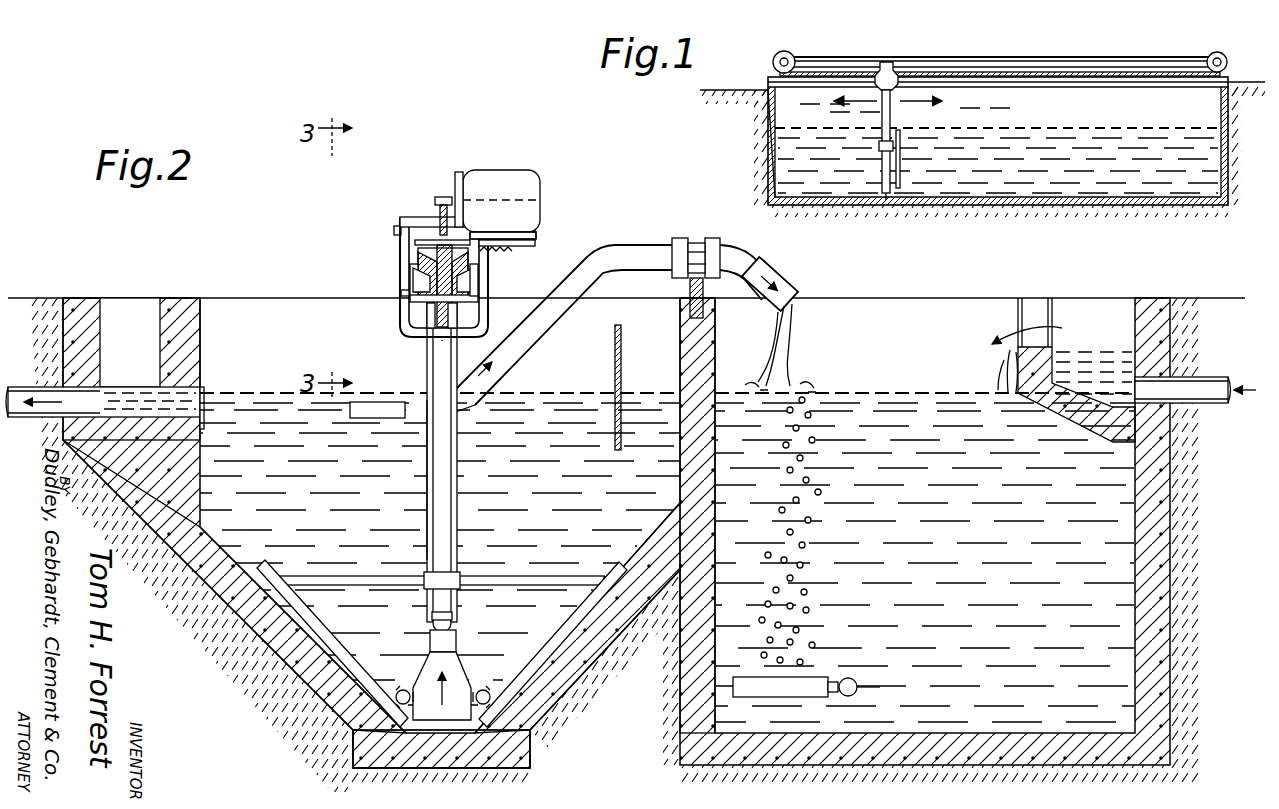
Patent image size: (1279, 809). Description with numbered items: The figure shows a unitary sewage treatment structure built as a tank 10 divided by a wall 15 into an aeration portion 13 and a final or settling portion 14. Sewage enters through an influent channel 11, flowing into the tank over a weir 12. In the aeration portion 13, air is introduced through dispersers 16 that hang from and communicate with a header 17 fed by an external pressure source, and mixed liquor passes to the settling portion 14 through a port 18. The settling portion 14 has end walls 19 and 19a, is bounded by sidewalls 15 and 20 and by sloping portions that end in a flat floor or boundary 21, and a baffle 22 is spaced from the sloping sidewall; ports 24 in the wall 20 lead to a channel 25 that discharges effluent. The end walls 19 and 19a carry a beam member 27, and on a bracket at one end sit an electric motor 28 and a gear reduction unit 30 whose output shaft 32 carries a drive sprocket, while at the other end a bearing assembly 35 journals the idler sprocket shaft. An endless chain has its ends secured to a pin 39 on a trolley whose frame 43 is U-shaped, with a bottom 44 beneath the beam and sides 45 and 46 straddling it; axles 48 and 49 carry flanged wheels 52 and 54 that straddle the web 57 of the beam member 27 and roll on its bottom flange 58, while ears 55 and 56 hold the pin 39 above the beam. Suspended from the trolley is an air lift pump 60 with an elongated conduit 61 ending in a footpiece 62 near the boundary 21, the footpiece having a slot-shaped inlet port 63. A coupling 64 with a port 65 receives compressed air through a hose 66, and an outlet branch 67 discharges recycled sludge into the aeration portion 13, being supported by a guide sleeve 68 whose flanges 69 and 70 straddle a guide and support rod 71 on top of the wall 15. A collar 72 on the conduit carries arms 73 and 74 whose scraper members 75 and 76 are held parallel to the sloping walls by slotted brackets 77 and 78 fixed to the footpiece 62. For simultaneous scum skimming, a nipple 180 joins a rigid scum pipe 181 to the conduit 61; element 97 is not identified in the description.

In FIG. 2, the tank 10 is at (1172, 592).
In FIG. 1, the tank 10 is at (768, 110).
In FIG. 2, the influent channel 11 is at (1197, 405).
In FIG. 2, the weir 12 is at (1052, 346).
In FIG. 1, the weir 12 is at (972, 92).
In FIG. 2, the aeration portion 13 is at (925, 557).
In FIG. 2, the final tank portion 14 is at (440, 549).
In FIG. 2, the wall 15 is at (716, 474).
In FIG. 2, the dispersers 16 is at (820, 677).
In FIG. 2, the header 17 is at (880, 687).
In FIG. 2, the port 18 is at (681, 391).
In FIG. 1, the end wall 19 is at (768, 180).
In FIG. 1, the end wall 19a is at (1222, 178).
In FIG. 2, the sidewall 20 is at (200, 332).
In FIG. 2, the flat floor 21 is at (353, 750).
In FIG. 2, the baffle 22 is at (614, 355).
In FIG. 2, the ports 24 is at (200, 385).
In FIG. 2, the channel 25 is at (128, 386).
In FIG. 2, the beam member 27 is at (418, 243).
In FIG. 1, the beam member 27 is at (770, 80).
In FIG. 2, the electric motor 28 is at (541, 195).
In FIG. 1, the electric motor 28 is at (790, 54).
In FIG. 2, the gear reduction unit 30 is at (458, 172).
In FIG. 2, the output shaft 32 is at (443, 197).
In FIG. 1, the bearing assembly 35 is at (1217, 52).
In FIG. 2, the pin 39 is at (406, 218).
In FIG. 2, the frame 43 is at (409, 279).
In FIG. 2, the bottom 44 is at (424, 330).
In FIG. 2, the side 45 is at (470, 309).
In FIG. 2, the side 46 is at (400, 319).
In FIG. 2, the axle 48 is at (472, 283).
In FIG. 2, the axle 49 is at (400, 301).
In FIG. 2, the flanged wheel 52 is at (492, 255).
In FIG. 2, the flanged wheel 54 is at (418, 303).
In FIG. 2, the ear 55 is at (480, 240).
In FIG. 2, the ear 56 is at (408, 226).
In FIG. 2, the web 57 is at (396, 268).
In FIG. 1, the web 57 is at (1100, 66).
In FIG. 2, the bottom flange 58 is at (412, 333).
In FIG. 2, the pump 60 is at (425, 501).
In FIG. 2, the elongated conduit 61 is at (458, 465).
In FIG. 2, the footpiece 62 is at (460, 662).
In FIG. 2, the inlet port 63 is at (530, 752).
In FIG. 2, the coupling 64 is at (452, 622).
In FIG. 1, the coupling 64 is at (894, 178).
In FIG. 2, the port 65 is at (432, 622).
In FIG. 1, the port 65 is at (882, 182).
In FIG. 2, the hose 66 is at (426, 465).
In FIG. 2, the outlet branch 67 is at (546, 335).
In FIG. 2, the guide sleeve 68 is at (696, 240).
In FIG. 2, the flange 69 is at (672, 242).
In FIG. 2, the flange 70 is at (720, 243).
In FIG. 2, the guide and support rod 71 is at (762, 271).
In FIG. 2, the collar 72 is at (462, 578).
In FIG. 2, the arm 73 is at (352, 575).
In FIG. 2, the arm 74 is at (572, 575).
In FIG. 2, the scraper member 75 is at (340, 656).
In FIG. 2, the scraper member 76 is at (560, 632).
In FIG. 2, the slotted bracket 77 is at (403, 690).
In FIG. 2, the slotted bracket 78 is at (488, 692).
In FIG. 1, the tank wall 97 is at (768, 137).
In FIG. 1, the nipple 180 is at (890, 198).
In FIG. 1, the scum pipe 181 is at (900, 144).